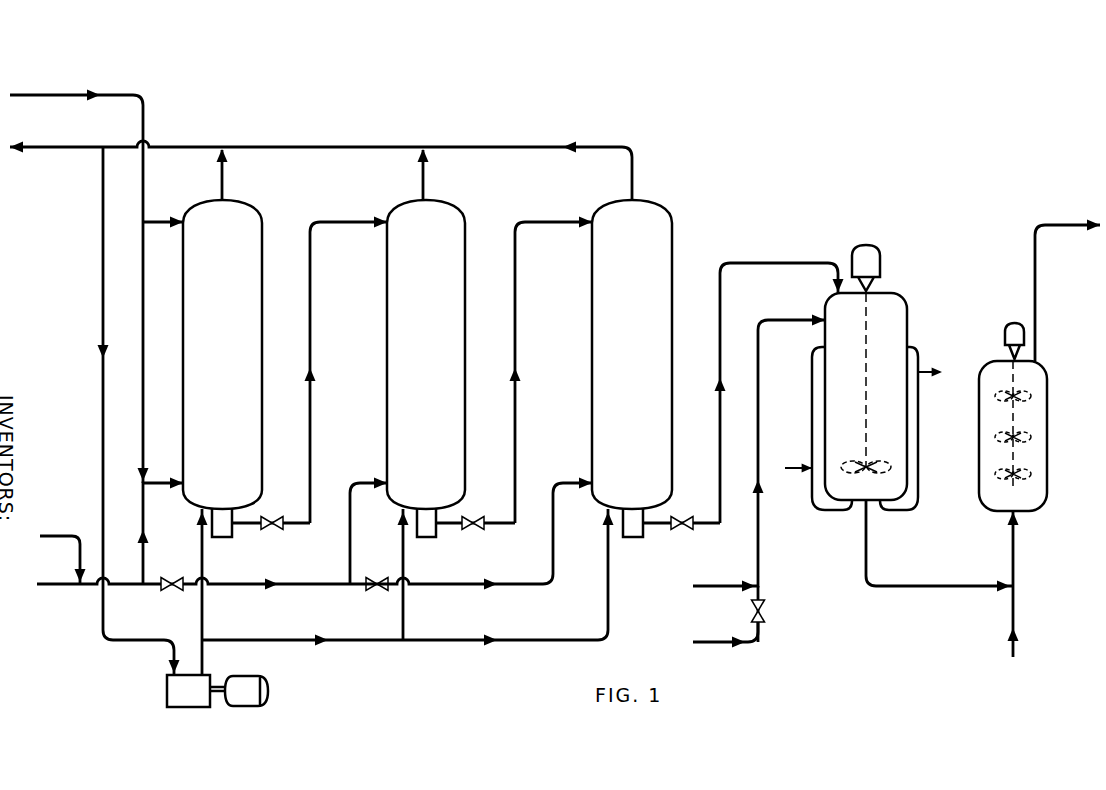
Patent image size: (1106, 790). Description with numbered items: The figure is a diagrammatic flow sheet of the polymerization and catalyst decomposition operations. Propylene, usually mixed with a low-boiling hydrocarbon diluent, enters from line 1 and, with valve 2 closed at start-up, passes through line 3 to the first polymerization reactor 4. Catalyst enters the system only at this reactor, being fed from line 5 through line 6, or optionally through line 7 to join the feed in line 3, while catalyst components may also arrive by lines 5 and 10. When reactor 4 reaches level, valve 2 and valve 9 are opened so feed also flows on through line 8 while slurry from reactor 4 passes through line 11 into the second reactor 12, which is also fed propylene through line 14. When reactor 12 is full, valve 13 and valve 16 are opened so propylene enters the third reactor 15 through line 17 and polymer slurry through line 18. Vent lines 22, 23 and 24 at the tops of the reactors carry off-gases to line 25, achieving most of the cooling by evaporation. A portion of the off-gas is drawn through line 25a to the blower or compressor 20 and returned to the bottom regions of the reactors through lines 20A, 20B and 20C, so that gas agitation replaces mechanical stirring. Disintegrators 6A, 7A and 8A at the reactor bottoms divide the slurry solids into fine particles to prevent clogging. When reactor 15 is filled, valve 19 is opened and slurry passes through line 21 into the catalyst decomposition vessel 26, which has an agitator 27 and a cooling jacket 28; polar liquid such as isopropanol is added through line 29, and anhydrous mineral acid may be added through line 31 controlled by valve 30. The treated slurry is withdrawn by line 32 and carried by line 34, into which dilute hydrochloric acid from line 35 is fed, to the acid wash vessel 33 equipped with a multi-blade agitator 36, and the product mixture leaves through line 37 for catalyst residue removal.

The line 1 is at (48, 584).
The valve 2 is at (168, 582).
The line 3 is at (158, 481).
The polymerization reactor 4 is at (228, 349).
The line 5 is at (63, 95).
The line 6 is at (152, 224).
The disintegrator 6A is at (224, 528).
The line 7 is at (144, 372).
The disintegrator 7A is at (426, 528).
The line 8 is at (292, 590).
The disintegrator 8A is at (634, 528).
The valve 9 is at (276, 530).
The line 10 is at (54, 538).
The line 11 is at (313, 248).
The reactor 12 is at (440, 351).
The valve 13 is at (378, 591).
The line 14 is at (352, 551).
The reactor 15 is at (646, 351).
The valve 16 is at (480, 530).
The line 17 is at (556, 555).
The line 18 is at (518, 248).
The valve 19 is at (692, 530).
The blower or compressor 20 is at (197, 708).
The line 20A is at (205, 605).
The line 20B is at (406, 605).
The line 20C is at (607, 611).
The line 21 is at (800, 262).
The vent line 22 is at (223, 184).
The vent line 23 is at (424, 184).
The vent line 24 is at (633, 187).
The line 25 is at (322, 147).
The line 25a is at (102, 281).
The vessel 26 is at (903, 293).
The agitator 27 is at (870, 432).
The cooling jacket 28 is at (908, 506).
The line 29 is at (705, 591).
The valve 30 is at (768, 614).
The line 31 is at (724, 640).
The line 32 is at (902, 591).
The acid wash vessel 33 is at (1047, 381).
The line 34 is at (1011, 546).
The line 35 is at (1011, 626).
The agitator 36 is at (1027, 462).
The line 37 is at (1033, 250).